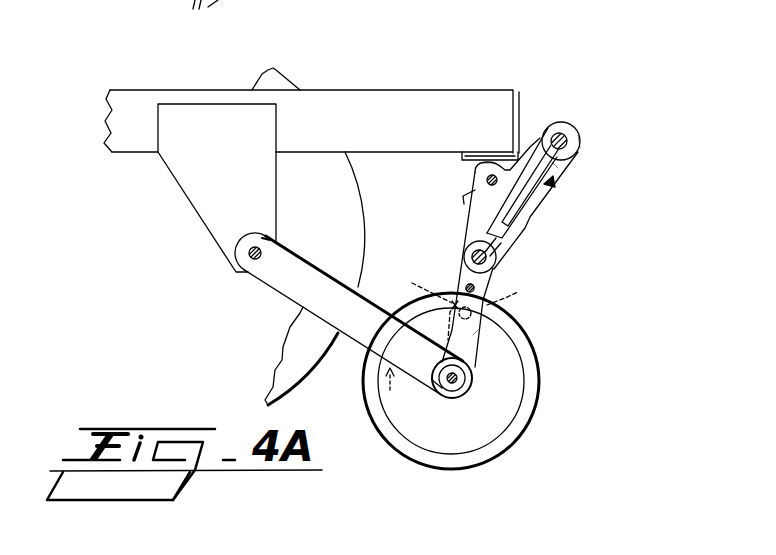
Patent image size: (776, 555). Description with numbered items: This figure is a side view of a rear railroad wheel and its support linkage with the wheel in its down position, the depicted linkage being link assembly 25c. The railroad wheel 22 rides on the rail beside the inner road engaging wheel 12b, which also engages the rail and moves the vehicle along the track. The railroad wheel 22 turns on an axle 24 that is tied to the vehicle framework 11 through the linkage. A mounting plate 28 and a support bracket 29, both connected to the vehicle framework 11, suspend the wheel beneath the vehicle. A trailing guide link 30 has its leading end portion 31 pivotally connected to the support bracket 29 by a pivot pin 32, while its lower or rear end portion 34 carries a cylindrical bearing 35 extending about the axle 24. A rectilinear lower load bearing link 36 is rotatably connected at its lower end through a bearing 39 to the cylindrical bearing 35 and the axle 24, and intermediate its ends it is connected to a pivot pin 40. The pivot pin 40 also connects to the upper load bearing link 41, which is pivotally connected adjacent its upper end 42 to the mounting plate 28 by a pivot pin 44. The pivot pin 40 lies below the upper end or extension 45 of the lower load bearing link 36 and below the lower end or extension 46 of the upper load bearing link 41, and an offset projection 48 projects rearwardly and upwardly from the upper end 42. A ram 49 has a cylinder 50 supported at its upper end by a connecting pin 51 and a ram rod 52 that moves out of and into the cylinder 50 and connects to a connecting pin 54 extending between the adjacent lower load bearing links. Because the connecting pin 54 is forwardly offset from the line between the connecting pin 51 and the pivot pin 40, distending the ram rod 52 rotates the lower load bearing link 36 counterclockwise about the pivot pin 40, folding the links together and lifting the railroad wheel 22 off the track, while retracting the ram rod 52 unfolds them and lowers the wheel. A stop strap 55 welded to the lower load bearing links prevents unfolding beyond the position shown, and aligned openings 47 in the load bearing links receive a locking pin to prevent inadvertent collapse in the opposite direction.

The vehicle framework 11 is at (470, 88).
The inner road engaging wheel 12b is at (293, 386).
The railroad wheel 22 is at (517, 438).
The axle 24 is at (450, 383).
The link assembly 25c is at (402, 387).
The mounting plate 28 is at (519, 126).
The support bracket 29 is at (205, 226).
The trailing guide link 30 is at (325, 312).
The leading end portion 31 is at (264, 236).
The pivot pin 32 is at (254, 247).
The lower or rear end portion 34 is at (440, 380).
The cylindrical bearing 35 is at (460, 387).
The lower load bearing link 36 is at (473, 335).
The bearing 39 is at (473, 377).
The pivot pin 40 is at (493, 285).
The upper load bearing link 41 is at (467, 208).
The upper end 42 is at (478, 170).
The pivot pin 44 is at (487, 180).
The upper end or extension 45 is at (472, 255).
The lower end or extension 46 is at (424, 307).
The openings 47 is at (461, 328).
The offset projection 48 is at (580, 142).
The ram 49 is at (558, 160).
The cylinder 50 is at (553, 185).
The connecting pin 51 is at (567, 135).
The ram rod 52 is at (500, 248).
The connecting pin 54 is at (466, 284).
The stop strap 55 is at (513, 294).